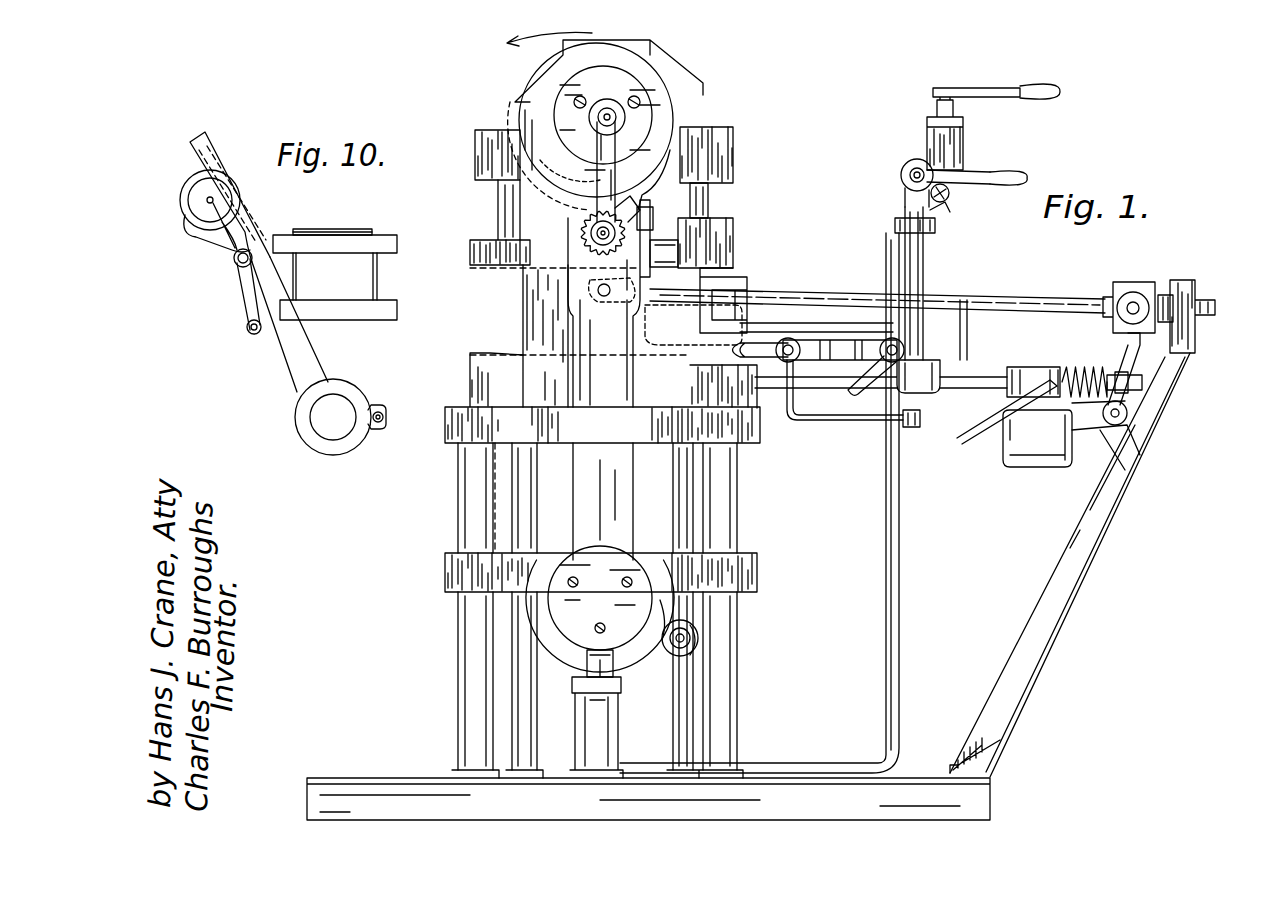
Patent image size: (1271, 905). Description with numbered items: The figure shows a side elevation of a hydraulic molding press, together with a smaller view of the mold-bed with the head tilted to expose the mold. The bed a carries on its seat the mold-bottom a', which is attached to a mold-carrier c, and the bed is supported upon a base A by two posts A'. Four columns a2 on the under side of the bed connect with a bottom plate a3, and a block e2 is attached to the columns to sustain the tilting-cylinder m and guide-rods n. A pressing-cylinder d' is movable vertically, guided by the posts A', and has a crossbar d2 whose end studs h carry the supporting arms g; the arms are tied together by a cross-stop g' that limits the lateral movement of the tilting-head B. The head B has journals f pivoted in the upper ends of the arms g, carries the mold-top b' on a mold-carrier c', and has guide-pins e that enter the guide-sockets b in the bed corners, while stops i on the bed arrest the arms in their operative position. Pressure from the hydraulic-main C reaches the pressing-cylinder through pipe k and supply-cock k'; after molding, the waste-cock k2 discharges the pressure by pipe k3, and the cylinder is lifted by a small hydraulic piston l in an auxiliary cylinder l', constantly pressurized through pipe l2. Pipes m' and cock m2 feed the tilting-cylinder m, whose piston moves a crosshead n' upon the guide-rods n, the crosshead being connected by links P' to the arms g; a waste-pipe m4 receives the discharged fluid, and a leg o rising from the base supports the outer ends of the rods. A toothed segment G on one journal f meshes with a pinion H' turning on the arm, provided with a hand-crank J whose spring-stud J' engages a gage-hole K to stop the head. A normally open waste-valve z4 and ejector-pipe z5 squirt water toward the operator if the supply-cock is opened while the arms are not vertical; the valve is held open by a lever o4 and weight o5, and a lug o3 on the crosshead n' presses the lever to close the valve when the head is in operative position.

In FIG. 1, the base A is at (648, 631).
In FIG. 1, the posts A' is at (558, 606).
In FIG. 1, the bed a is at (555, 224).
In FIG. 10, the bed a is at (347, 244).
In FIG. 10, the mold-bottom a' is at (349, 214).
In FIG. 1, the columns a2 is at (523, 318).
In FIG. 10, the columns a2 is at (377, 276).
In FIG. 1, the bottom plate a3 is at (470, 382).
In FIG. 10, the bottom plate a3 is at (397, 310).
In FIG. 1, the tilting-head B is at (733, 145).
In FIG. 10, the tilting-head B is at (194, 140).
In FIG. 1, the guide-sockets b is at (719, 234).
In FIG. 10, the mold-top b' is at (236, 180).
In FIG. 1, the hydraulic-main C is at (950, 197).
In FIG. 10, the mold-carrier c is at (353, 226).
In FIG. 10, the mold-carrier c' is at (227, 173).
In FIG. 1, the pressing-cylinder d' is at (462, 498).
In FIG. 1, the crossbar d2 is at (560, 628).
In FIG. 1, the guide-pins e is at (708, 190).
In FIG. 1, the block e2 is at (730, 278).
In FIG. 10, the journals f is at (200, 188).
In FIG. 1, the toothed segment G is at (512, 117).
In FIG. 1, the supporting arms g is at (610, 550).
In FIG. 10, the supporting arms g is at (311, 356).
In FIG. 1, the cross-stop g' is at (680, 655).
In FIG. 10, the cross-stop g' is at (375, 435).
In FIG. 1, the pinion H' is at (586, 225).
In FIG. 1, the studs h is at (574, 602).
In FIG. 10, the studs h is at (320, 417).
In FIG. 1, the stops i is at (678, 240).
In FIG. 1, the hand-crank J is at (589, 172).
In FIG. 10, the hand-crank J is at (236, 296).
In FIG. 1, the spring-stud J' is at (649, 100).
In FIG. 10, the gage-hole K is at (215, 205).
In FIG. 1, the pipe k is at (854, 391).
In FIG. 1, the supply-cock k' is at (944, 254).
In FIG. 1, the waste-cock k2 is at (993, 127).
In FIG. 1, the pipe k3 is at (990, 375).
In FIG. 1, the auxiliary hydraulic piston l is at (571, 671).
In FIG. 1, the auxiliary cylinder l' is at (581, 727).
In FIG. 1, the pipe l2 is at (899, 640).
In FIG. 1, the tilting-cylinder m is at (822, 326).
In FIG. 1, the pipes m' is at (845, 411).
In FIG. 1, the cock m2 is at (796, 340).
In FIG. 1, the waste-pipe m4 is at (668, 355).
In FIG. 1, the guide-rods n is at (971, 330).
In FIG. 1, the crosshead n' is at (1138, 292).
In FIG. 1, the leg o is at (1070, 565).
In FIG. 1, the lug o3 is at (1128, 337).
In FIG. 1, the lever o4 is at (1175, 342).
In FIG. 1, the weight o5 is at (1038, 467).
In FIG. 1, the links P' is at (877, 288).
In FIG. 1, the waste-valve z4 is at (1074, 367).
In FIG. 1, the ejector-pipe z5 is at (1007, 420).